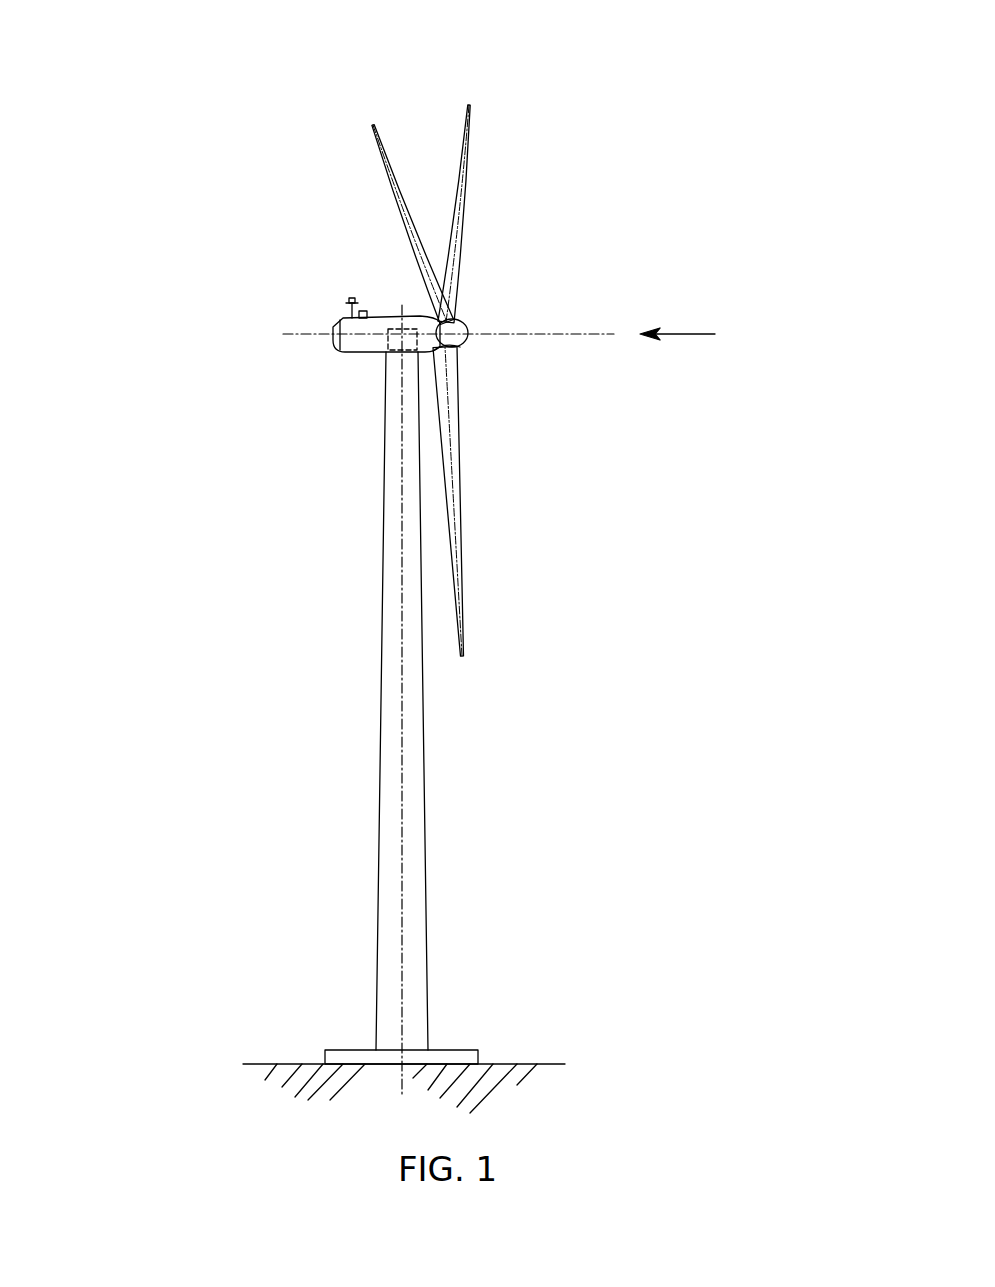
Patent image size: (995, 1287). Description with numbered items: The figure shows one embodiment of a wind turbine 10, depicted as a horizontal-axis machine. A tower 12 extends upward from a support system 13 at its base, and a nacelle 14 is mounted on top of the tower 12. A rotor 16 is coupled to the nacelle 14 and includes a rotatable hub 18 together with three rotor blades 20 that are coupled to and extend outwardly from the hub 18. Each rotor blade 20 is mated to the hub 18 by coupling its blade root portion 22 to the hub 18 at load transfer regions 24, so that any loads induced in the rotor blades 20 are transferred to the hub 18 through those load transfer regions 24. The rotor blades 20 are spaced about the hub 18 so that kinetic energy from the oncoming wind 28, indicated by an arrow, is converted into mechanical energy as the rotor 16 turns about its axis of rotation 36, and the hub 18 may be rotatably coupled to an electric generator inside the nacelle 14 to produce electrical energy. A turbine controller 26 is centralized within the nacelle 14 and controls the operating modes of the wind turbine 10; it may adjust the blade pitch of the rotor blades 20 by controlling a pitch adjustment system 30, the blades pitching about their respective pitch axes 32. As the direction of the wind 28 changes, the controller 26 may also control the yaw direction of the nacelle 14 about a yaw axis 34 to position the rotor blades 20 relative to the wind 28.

The wind turbine 10 is at (506, 71).
The tower 12 is at (385, 792).
The support system 13 is at (470, 1049).
The nacelle 14 is at (354, 352).
The rotor 16 is at (435, 380).
The rotatable hub 18 is at (470, 330).
The rotor blade 20 is at (463, 120).
The blade root portion 22 is at (455, 395).
The load transfer region 24 is at (458, 348).
The turbine controller 26 is at (388, 355).
The wind 28 is at (684, 333).
The pitch adjustment system 30 is at (418, 320).
The pitch axis 32 is at (472, 120).
The yaw axis 34 is at (401, 552).
The axis of rotation 36 is at (586, 332).